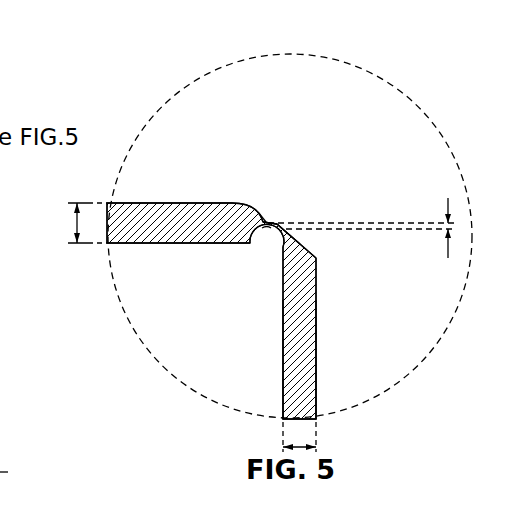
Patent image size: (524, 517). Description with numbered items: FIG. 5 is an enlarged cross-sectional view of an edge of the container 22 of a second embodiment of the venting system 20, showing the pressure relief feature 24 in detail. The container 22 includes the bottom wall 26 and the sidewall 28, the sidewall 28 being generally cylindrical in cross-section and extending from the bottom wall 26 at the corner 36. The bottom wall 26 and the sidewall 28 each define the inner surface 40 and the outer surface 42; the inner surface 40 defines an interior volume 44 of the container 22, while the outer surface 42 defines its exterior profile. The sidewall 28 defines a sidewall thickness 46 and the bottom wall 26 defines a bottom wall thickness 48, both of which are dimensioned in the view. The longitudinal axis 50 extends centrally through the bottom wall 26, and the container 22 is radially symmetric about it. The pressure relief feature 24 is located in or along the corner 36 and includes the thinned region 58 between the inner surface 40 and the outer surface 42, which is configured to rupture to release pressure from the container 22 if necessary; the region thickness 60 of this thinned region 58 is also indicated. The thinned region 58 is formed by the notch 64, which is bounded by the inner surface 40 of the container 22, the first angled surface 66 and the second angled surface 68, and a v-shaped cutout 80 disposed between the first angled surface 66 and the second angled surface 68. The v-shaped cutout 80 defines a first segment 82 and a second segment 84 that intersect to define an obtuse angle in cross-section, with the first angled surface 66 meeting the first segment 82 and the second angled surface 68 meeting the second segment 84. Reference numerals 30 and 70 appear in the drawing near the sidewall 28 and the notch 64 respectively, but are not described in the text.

The venting system 20 is at (440, 80).
The container 22 is at (318, 345).
The pressure relief feature 24 is at (306, 202).
The bottom wall 26 is at (197, 203).
The sidewall 28 is at (318, 387).
The inner surface of second panel 30 is at (317, 292).
The corner 36 is at (308, 225).
The inner surface 40 is at (142, 244).
The outer surface 42 is at (160, 203).
The interior volume 44 is at (228, 368).
The sidewall thickness 46 is at (316, 446).
The bottom wall thickness 48 is at (77, 222).
The longitudinal axis 50 is at (21, 477).
The thinned region 58 is at (276, 202).
The region thickness 60 is at (448, 248).
The notch 64 is at (250, 255).
The first angled surface 66 is at (312, 256).
The second angled surface 68 is at (258, 206).
The fillet radius 70 is at (265, 232).
The v-shaped cutout 80 is at (286, 210).
The first segment 82 is at (304, 202).
The second segment 84 is at (264, 210).